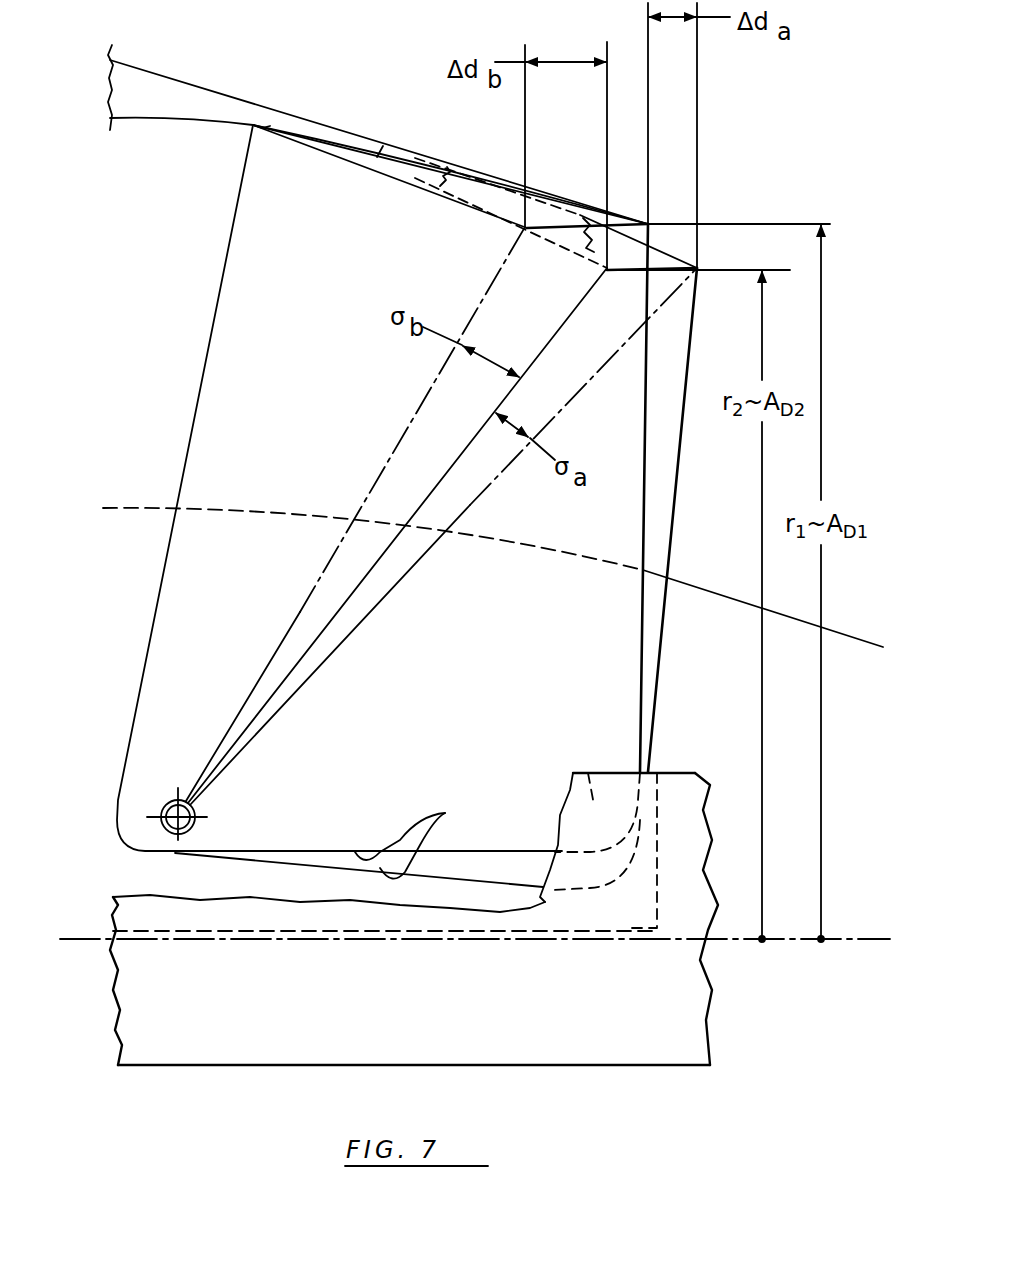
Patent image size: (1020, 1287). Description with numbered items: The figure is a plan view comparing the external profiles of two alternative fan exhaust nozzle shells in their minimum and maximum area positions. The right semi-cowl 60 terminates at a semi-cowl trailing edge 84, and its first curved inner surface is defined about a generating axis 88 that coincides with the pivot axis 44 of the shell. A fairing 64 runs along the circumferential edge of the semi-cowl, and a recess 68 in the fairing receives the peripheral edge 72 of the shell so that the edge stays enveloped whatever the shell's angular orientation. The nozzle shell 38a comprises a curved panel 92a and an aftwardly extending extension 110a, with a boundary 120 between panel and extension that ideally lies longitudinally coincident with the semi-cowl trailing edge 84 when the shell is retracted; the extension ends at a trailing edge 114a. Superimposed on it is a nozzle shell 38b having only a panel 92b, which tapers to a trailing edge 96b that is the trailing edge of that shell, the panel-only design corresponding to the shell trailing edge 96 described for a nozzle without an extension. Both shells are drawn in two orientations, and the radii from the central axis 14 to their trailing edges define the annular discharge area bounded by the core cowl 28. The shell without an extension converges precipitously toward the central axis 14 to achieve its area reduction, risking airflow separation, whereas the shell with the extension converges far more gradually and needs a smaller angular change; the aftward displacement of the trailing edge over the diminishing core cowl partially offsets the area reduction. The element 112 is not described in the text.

The central axis 14 is at (783, 940).
The core cowl 28 is at (884, 775).
The pivot axis 44 is at (198, 822).
The right semi-cowl 60 is at (163, 103).
The fairing 64 is at (462, 1005).
The recess 68 is at (588, 772).
The peripheral edge 72 is at (418, 838).
The semi-cowl trailing edge 84 is at (387, 150).
The generating axis 88 is at (200, 822).
The curved panel 92a is at (327, 145).
The panel 92b is at (487, 213).
The trailing edge of panel 96 is at (400, 152).
The trailing edge 96b is at (540, 225).
The extension 110a is at (583, 210).
The leading edge 112 is at (377, 157).
The trailing edge of extension 114a is at (648, 224).
The boundary 120 is at (380, 155).
The nozzle shell 38a is at (478, 160).
The nozzle shell 38b is at (433, 205).